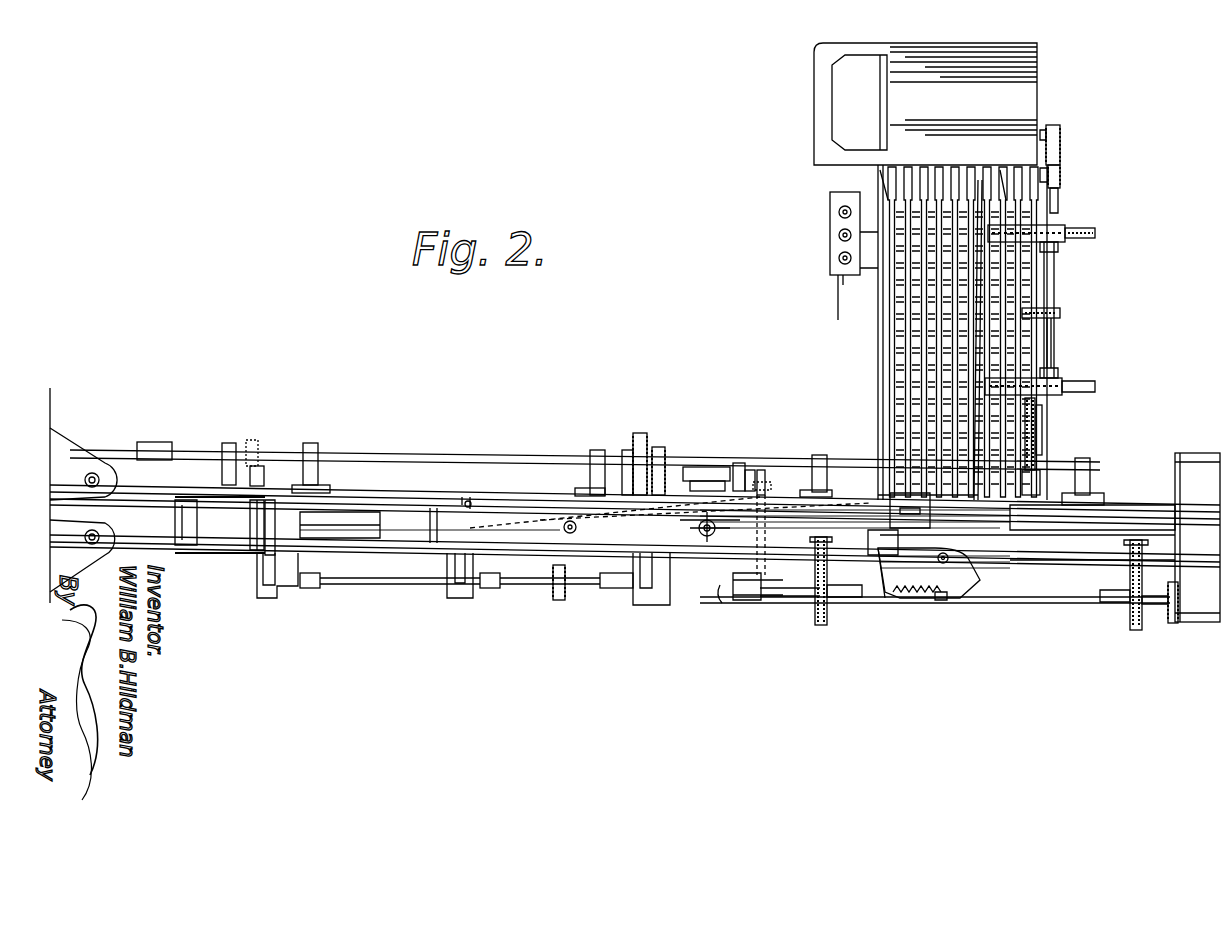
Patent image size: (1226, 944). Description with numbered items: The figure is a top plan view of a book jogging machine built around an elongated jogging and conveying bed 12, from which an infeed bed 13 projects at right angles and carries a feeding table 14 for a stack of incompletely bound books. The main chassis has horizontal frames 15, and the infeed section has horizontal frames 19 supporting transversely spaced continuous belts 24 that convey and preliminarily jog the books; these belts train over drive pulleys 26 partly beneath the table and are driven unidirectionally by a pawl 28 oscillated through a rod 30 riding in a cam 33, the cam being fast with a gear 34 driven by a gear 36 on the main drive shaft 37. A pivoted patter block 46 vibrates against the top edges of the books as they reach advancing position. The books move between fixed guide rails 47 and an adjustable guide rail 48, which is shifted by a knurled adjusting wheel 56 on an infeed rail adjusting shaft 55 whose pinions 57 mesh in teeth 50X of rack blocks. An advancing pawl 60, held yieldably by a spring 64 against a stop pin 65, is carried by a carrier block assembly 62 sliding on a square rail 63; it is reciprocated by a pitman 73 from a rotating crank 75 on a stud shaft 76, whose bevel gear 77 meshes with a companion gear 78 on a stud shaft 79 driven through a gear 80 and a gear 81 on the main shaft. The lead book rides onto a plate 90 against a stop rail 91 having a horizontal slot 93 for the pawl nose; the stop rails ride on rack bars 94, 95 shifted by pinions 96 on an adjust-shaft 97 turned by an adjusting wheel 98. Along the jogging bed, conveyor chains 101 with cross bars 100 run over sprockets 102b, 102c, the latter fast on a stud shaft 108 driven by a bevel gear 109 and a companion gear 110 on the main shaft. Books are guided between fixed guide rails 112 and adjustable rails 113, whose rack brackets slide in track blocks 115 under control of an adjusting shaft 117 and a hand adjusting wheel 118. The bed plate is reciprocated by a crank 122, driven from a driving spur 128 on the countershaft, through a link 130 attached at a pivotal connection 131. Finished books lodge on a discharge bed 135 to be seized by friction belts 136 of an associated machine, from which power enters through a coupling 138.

The jogging and conveying bed 12 is at (533, 477).
The infeed bed 13 is at (872, 358).
The feeding table 14 is at (992, 131).
The horizontal frames 15 is at (1145, 505).
The horizontal frames 19 is at (886, 170).
The continuous belts 24 is at (935, 395).
The drive pulleys 26 is at (1060, 182).
The pawl 28 is at (1060, 146).
The rod 30 is at (1052, 275).
The cam 33 is at (1040, 420).
The gear 34 is at (1042, 438).
The gear 36 is at (1040, 488).
The main drive shaft 37 is at (455, 456).
The patter block 46 is at (930, 514).
The guide rails 47 is at (878, 293).
The guide rail 48 is at (975, 300).
The teeth 50X is at (1095, 238).
The infeed rail adjusting shaft 55 is at (1050, 345).
The knurled adjusting wheel 56 is at (1060, 313).
The pinions 57 is at (1060, 233).
The advancing pawl 60 is at (929, 573).
The carrier block assembly 62 is at (884, 568).
The square rail 63 is at (1048, 562).
The spring 64 is at (905, 594).
The stop pin 65 is at (942, 600).
The pitman 73 is at (800, 597).
The rotating crank 75 is at (747, 598).
The stud shaft 76 is at (772, 541).
The bevel gear 77 is at (770, 487).
The companion gear 78 is at (765, 463).
The stud shaft 79 is at (710, 467).
The gear 80 is at (628, 491).
The gear 81 is at (643, 434).
The plate 90 is at (1092, 519).
The stop rail 91 is at (1100, 535).
The horizontal slot 93 is at (878, 551).
The rack bar 94 is at (828, 620).
The rack bar 95 is at (1135, 635).
The pinions 96 is at (832, 597).
The adjust-shaft 97 is at (1075, 605).
The adjusting wheel 98 is at (1171, 626).
The conveyor chain cross bars 100 is at (380, 532).
The conveyor chains 101 is at (842, 504).
The sprocket 102b is at (198, 522).
The sprocket 102c is at (265, 556).
The stud shaft 108 is at (242, 525).
The bevel gear 109 is at (288, 468).
The companion gear 110 is at (256, 450).
The fixed guide rails 112 is at (467, 503).
The adjustable rails 113 is at (432, 518).
The track blocks 115 is at (300, 590).
The adjusting shaft 117 is at (512, 590).
The hand adjusting wheel 118 is at (560, 601).
The crank 122 is at (728, 522).
The driving spur 128 is at (665, 448).
The link 130 is at (692, 531).
The pivotal connection 131 is at (438, 531).
The discharge bed 135 is at (201, 525).
The friction belts 136 is at (74, 429).
The coupling 138 is at (155, 442).